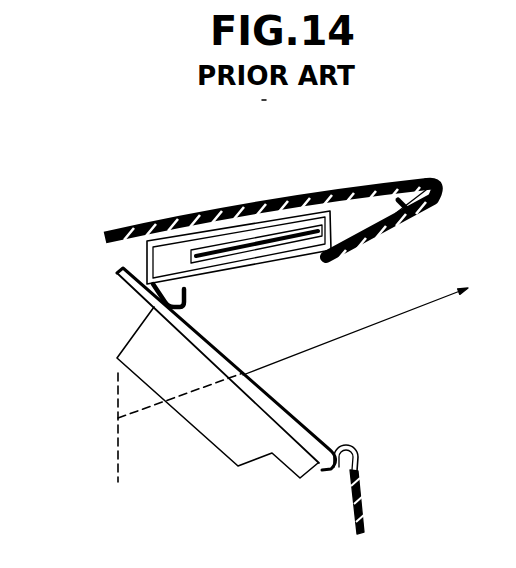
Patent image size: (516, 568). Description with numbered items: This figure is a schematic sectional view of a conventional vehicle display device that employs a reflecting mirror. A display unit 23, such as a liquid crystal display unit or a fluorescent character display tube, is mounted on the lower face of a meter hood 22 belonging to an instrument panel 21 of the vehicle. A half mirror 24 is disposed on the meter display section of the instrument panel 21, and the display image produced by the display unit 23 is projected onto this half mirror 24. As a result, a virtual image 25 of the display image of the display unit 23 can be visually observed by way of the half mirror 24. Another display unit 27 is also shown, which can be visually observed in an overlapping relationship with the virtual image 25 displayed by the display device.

The instrument panel 21 is at (330, 509).
The meter hood 22 is at (383, 200).
The display unit 23 is at (243, 372).
The half mirror 24 is at (298, 418).
The virtual image 25 is at (118, 460).
The another display unit 27 is at (235, 451).